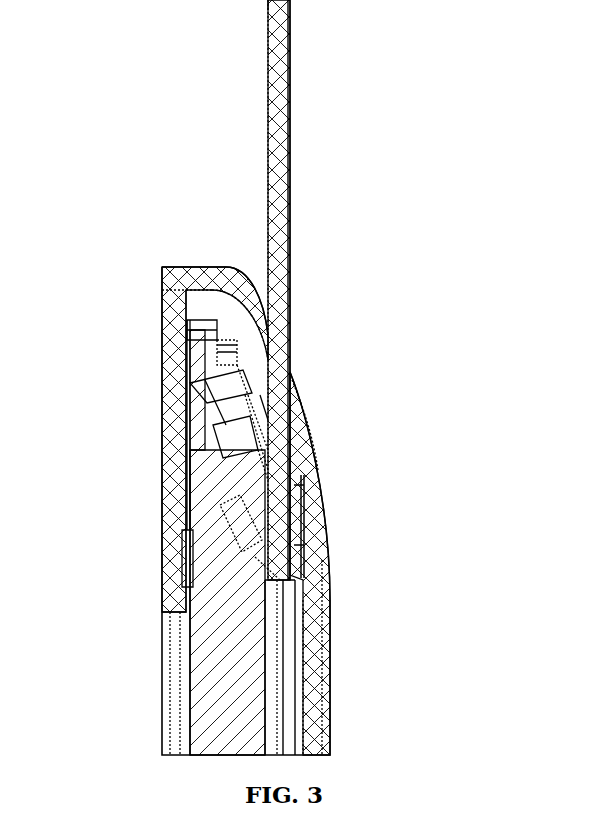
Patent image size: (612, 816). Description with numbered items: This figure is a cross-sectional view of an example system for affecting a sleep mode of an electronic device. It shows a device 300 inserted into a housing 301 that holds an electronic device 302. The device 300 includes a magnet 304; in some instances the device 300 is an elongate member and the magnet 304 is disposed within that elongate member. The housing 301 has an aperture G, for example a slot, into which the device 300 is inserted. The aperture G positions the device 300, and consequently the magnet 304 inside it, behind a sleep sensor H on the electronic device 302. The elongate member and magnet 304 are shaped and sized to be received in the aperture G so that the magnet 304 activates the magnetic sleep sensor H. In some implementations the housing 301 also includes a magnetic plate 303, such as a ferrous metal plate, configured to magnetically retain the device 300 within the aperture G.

The device 300 is at (290, 160).
The housing 301 is at (211, 283).
The electronic device 302 is at (222, 548).
The magnetic plate 303 is at (300, 548).
The magnet 304 is at (313, 492).
The aperture G is at (300, 412).
The sleep sensor H is at (255, 557).